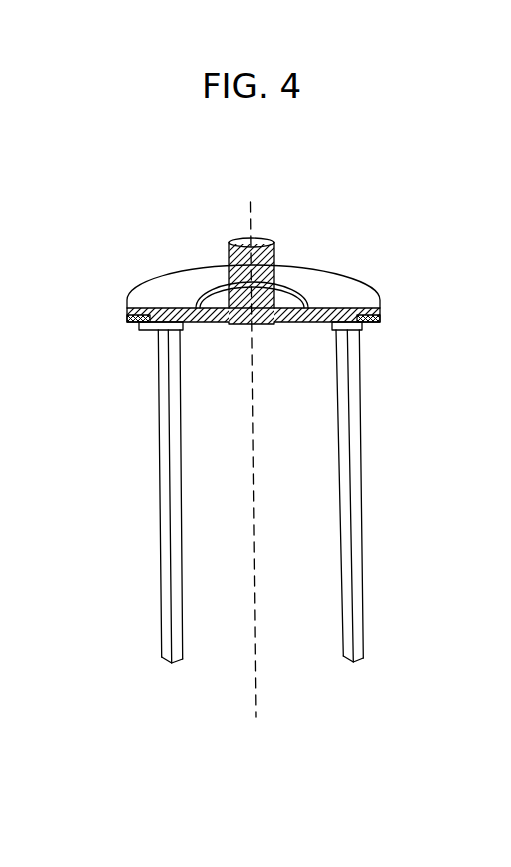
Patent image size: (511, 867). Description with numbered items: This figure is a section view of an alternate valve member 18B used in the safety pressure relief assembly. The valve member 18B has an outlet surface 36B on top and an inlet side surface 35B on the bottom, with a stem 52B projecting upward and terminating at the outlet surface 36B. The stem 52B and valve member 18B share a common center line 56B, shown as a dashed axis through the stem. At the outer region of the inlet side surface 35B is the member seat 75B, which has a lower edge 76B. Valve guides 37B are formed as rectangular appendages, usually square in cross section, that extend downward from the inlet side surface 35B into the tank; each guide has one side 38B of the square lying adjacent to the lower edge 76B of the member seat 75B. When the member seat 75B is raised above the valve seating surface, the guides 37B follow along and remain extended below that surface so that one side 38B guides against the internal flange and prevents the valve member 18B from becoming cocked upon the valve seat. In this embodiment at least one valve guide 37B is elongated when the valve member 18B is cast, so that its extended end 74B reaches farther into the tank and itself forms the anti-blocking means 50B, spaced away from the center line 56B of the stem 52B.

The valve member 18B is at (360, 228).
The outlet surface 36B is at (165, 290).
The stem 52B is at (260, 240).
The inlet side surface 35B is at (150, 332).
The member seat 75B is at (380, 315).
The lower edge 76B is at (372, 325).
The valve guides 37B is at (177, 498).
The one side 38B is at (355, 433).
The anti-blocking means 50B is at (378, 608).
The center line 56B is at (253, 697).
The extended end 74B is at (352, 662).